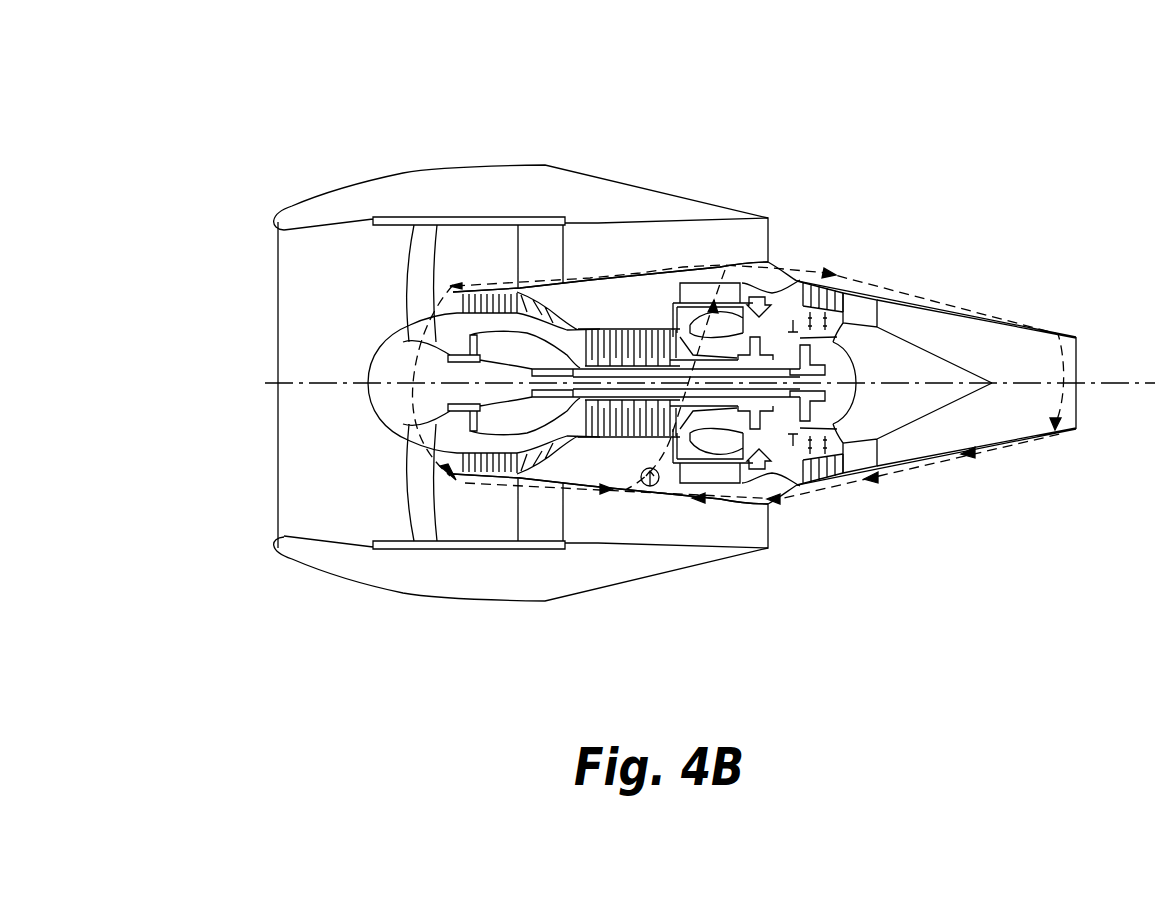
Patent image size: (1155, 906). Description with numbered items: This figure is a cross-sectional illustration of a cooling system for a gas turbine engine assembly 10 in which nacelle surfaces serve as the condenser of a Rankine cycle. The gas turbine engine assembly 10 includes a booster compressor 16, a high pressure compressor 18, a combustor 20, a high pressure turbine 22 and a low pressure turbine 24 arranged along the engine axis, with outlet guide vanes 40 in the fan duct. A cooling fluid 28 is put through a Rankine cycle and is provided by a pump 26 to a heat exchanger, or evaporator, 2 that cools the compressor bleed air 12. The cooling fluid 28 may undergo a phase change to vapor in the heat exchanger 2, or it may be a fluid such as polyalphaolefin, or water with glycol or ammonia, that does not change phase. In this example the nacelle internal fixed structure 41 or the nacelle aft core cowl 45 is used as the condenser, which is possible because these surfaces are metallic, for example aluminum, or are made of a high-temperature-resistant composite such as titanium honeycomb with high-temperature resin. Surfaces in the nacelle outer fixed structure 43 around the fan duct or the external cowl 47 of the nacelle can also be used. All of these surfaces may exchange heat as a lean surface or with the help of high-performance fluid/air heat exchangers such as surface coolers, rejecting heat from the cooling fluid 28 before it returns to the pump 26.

The gas turbine engine assembly 10 is at (198, 143).
The heat exchanger 2 is at (778, 268).
The compressor bleed air 12 is at (790, 267).
The booster compressor 16 is at (490, 490).
The high pressure compressor 18 is at (630, 453).
The combustor 20 is at (723, 452).
The high pressure turbine 22 is at (757, 458).
The low pressure turbine 24 is at (812, 482).
The pump 26 is at (648, 487).
The cooling fluid 28 is at (590, 281).
The outlet guide vanes 40 is at (517, 217).
The nacelle internal fixed structure 41 is at (610, 317).
The nacelle outer fixed structure 43 is at (708, 212).
The nacelle aft core cowl 45 is at (913, 283).
The external cowl 47 is at (683, 183).